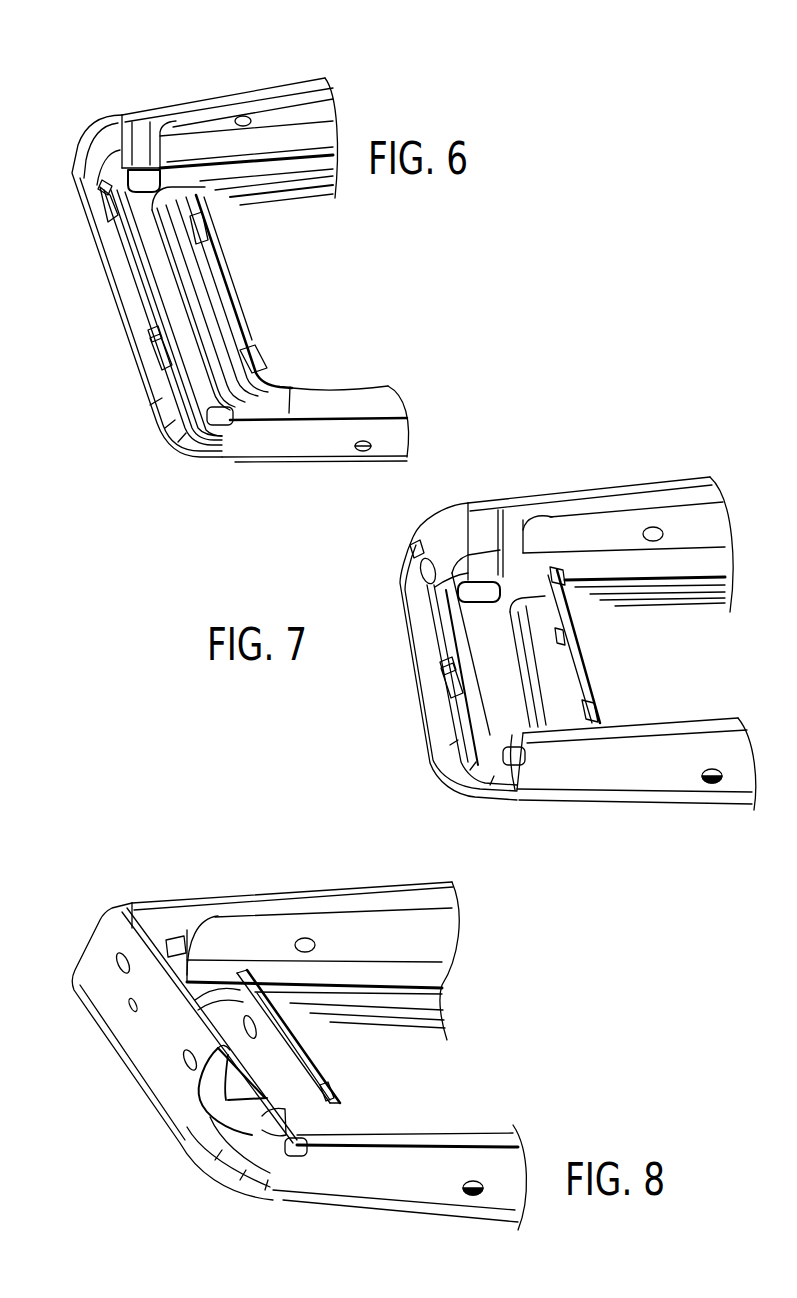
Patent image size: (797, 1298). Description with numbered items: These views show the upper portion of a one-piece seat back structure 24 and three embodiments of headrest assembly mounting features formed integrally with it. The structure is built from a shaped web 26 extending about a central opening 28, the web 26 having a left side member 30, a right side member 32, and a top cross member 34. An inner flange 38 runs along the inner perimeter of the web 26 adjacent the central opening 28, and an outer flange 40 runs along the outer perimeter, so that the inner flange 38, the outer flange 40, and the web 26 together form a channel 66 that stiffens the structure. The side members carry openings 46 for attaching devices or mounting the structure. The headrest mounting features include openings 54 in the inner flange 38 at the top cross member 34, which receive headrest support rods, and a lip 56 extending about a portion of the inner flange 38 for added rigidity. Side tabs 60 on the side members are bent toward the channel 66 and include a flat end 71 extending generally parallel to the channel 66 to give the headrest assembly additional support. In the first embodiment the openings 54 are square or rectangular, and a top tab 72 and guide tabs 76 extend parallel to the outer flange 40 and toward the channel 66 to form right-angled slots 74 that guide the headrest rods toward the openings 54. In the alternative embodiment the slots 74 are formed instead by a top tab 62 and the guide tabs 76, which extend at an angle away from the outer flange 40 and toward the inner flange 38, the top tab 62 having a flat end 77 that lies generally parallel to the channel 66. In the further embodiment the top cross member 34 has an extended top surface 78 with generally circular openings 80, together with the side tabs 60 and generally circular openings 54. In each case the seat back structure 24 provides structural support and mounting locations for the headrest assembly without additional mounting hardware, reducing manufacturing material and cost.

In FIG. 6, the one-piece seat back structure 24 is at (68, 95).
In FIG. 7, the one-piece seat back structure 24 is at (634, 405).
In FIG. 8, the one-piece seat back structure 24 is at (92, 850).
In FIG. 6, the web 26 is at (330, 113).
In FIG. 7, the web 26 is at (703, 512).
In FIG. 8, the web 26 is at (440, 937).
In FIG. 6, the central opening 28 is at (302, 338).
In FIG. 7, the central opening 28 is at (683, 664).
In FIG. 6, the left side member 30 is at (196, 118).
In FIG. 7, the left side member 30 is at (597, 527).
In FIG. 8, the left side member 30 is at (257, 933).
In FIG. 6, the right side member 32 is at (292, 440).
In FIG. 7, the right side member 32 is at (615, 770).
In FIG. 8, the right side member 32 is at (370, 1180).
In FIG. 6, the top cross member 34 is at (110, 253).
In FIG. 7, the top cross member 34 is at (415, 637).
In FIG. 8, the top cross member 34 is at (150, 1047).
In FIG. 6, the inner flange 38 is at (200, 220).
In FIG. 7, the inner flange 38 is at (597, 668).
In FIG. 8, the inner flange 38 is at (341, 1108).
In FIG. 6, the outer flange 40 is at (118, 330).
In FIG. 7, the outer flange 40 is at (413, 680).
In FIG. 8, the outer flange 40 is at (177, 1133).
In FIG. 6, the openings 46 is at (242, 116).
In FIG. 7, the openings 46 is at (652, 530).
In FIG. 8, the openings 46 is at (304, 938).
In FIG. 6, the openings 54 is at (204, 230).
In FIG. 7, the openings 54 is at (562, 635).
In FIG. 8, the openings 54 is at (256, 1027).
In FIG. 6, the lip 56 is at (232, 280).
In FIG. 7, the lip 56 is at (578, 652).
In FIG. 8, the lip 56 is at (297, 1047).
In FIG. 6, the side tabs 60 is at (152, 134).
In FIG. 7, the side tabs 60 is at (519, 532).
In FIG. 8, the side tabs 60 is at (190, 937).
In FIG. 7, the top tab 62 is at (460, 640).
In FIG. 8, the top tab 62 is at (203, 1127).
In FIG. 6, the channel 66 is at (190, 350).
In FIG. 7, the channel 66 is at (483, 620).
In FIG. 8, the channel 66 is at (216, 1018).
In FIG. 6, the flat end 71 is at (143, 182).
In FIG. 7, the flat end 71 is at (503, 587).
In FIG. 8, the flat end 71 is at (179, 947).
In FIG. 6, the top tab 72 is at (132, 277).
In FIG. 6, the slots 74 is at (113, 217).
In FIG. 7, the slots 74 is at (402, 589).
In FIG. 6, the guide tabs 76 is at (100, 197).
In FIG. 7, the guide tabs 76 is at (412, 545).
In FIG. 7, the flat end 77 is at (518, 767).
In FIG. 8, the flat end 77 is at (240, 1083).
In FIG. 8, the extended top surface 78 is at (130, 1047).
In FIG. 8, the openings 80 is at (130, 1010).